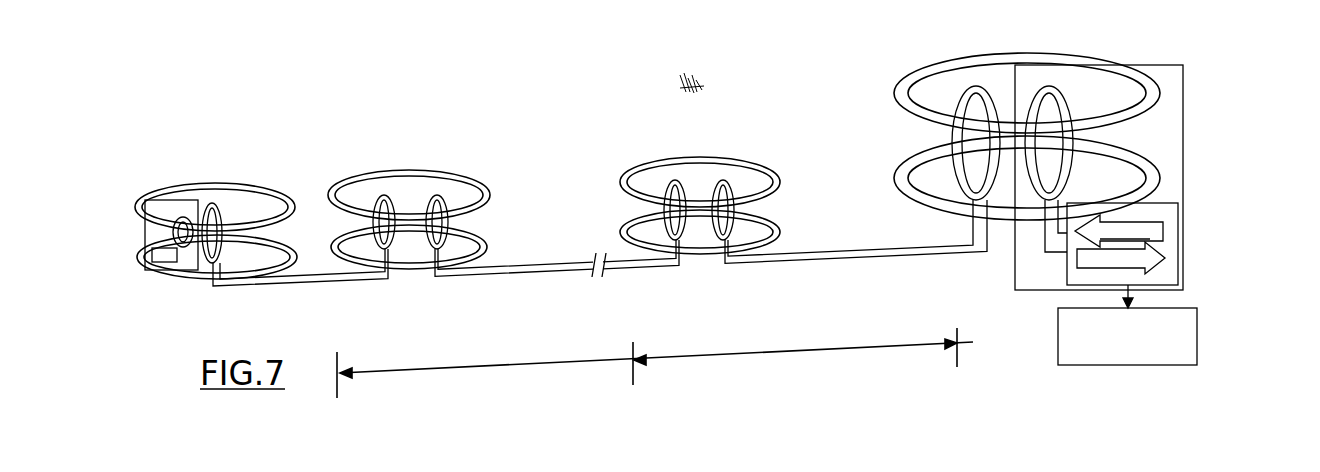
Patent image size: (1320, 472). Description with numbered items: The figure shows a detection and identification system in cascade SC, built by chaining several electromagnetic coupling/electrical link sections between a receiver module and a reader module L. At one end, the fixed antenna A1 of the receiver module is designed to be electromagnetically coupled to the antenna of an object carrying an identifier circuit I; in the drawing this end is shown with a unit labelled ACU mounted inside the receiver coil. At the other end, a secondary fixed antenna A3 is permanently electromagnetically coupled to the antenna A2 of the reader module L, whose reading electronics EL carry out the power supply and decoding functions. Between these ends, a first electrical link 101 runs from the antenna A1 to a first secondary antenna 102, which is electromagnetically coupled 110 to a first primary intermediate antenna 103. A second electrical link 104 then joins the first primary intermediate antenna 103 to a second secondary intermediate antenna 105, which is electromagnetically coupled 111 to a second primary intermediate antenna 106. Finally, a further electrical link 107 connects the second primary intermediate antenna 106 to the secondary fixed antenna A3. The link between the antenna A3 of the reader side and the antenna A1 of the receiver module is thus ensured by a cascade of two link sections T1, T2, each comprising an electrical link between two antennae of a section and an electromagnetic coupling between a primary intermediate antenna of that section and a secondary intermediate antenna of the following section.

The identifier circuit I is at (216, 195).
The antenna control unit ACU is at (171, 235).
The fixed antenna of the receiver module A1 is at (223, 228).
The first electrical link 101 is at (302, 283).
The first secondary antenna 102 is at (410, 250).
The first primary intermediate antenna 103 is at (500, 217).
The second electrical link 104 is at (477, 275).
The second secondary intermediate antenna 105 is at (692, 223).
The second primary intermediate antenna 106 is at (707, 228).
The second electrical link 107 is at (807, 257).
The electromagnetic coupling 110 is at (398, 190).
The electromagnetic coupling 111 is at (697, 187).
The detection and identification system in cascade SC is at (588, 175).
The link section T1 is at (700, 230).
The link section T2 is at (431, 262).
The reader module L is at (1050, 101).
The reading electronics EL is at (1058, 215).
The antenna of the reader module A2 is at (1062, 143).
The secondary fixed antenna A3 is at (966, 143).